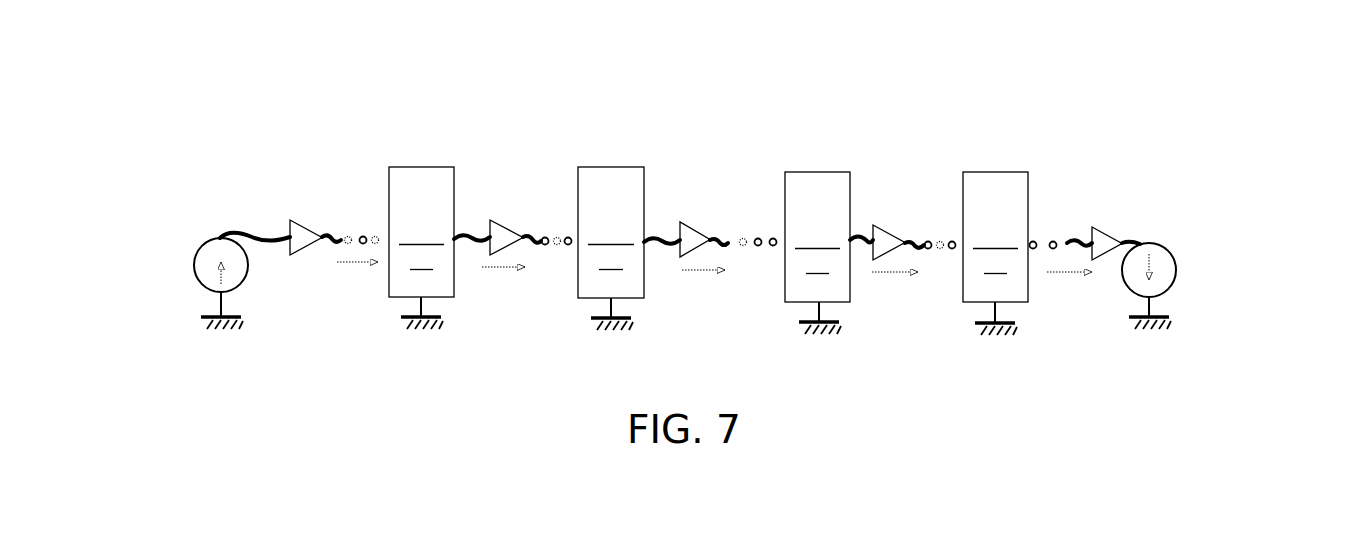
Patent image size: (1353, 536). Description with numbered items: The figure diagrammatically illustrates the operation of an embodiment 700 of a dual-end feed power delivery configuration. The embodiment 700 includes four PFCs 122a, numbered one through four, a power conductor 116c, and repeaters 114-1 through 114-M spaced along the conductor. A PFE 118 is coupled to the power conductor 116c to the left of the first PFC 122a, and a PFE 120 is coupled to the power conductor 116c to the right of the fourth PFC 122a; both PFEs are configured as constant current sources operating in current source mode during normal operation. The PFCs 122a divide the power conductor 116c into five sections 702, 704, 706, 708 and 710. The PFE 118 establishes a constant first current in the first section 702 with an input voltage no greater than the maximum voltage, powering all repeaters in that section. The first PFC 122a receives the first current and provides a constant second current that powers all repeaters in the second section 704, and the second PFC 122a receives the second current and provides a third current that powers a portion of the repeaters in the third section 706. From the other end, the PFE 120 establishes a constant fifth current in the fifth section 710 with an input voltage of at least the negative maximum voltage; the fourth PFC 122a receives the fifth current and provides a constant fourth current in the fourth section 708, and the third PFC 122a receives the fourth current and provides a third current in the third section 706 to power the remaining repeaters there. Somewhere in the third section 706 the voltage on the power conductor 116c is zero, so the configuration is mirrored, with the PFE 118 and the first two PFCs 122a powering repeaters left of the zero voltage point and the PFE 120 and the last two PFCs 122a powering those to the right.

The dual-end feed power delivery configuration embodiment 700 is at (694, 110).
The PFE 118 is at (194, 268).
The PFE 120 is at (1177, 265).
The PFC 122a is at (708, 251).
The power conductor 116c is at (262, 230).
The repeater 114-1 is at (308, 224).
The repeater 114-M is at (1109, 232).
The first section 702 is at (331, 312).
The second section 704 is at (516, 313).
The third section 706 is at (720, 310).
The fourth section 708 is at (907, 318).
The fifth section 710 is at (1069, 315).